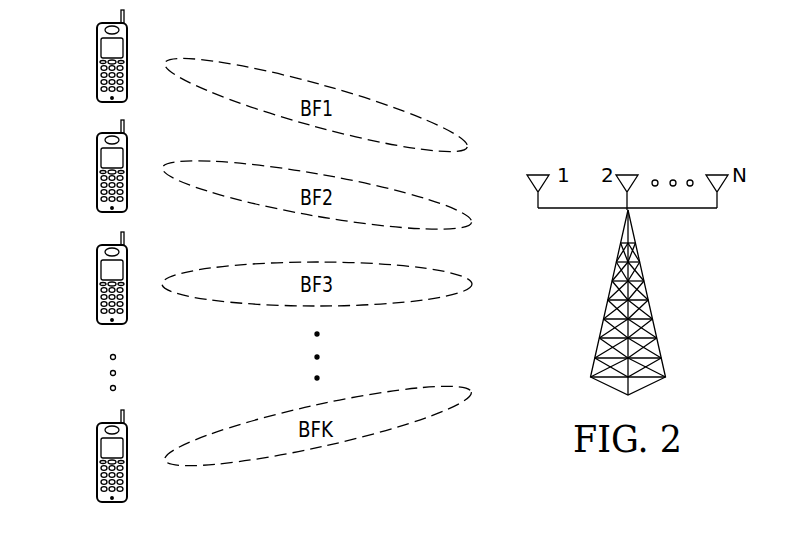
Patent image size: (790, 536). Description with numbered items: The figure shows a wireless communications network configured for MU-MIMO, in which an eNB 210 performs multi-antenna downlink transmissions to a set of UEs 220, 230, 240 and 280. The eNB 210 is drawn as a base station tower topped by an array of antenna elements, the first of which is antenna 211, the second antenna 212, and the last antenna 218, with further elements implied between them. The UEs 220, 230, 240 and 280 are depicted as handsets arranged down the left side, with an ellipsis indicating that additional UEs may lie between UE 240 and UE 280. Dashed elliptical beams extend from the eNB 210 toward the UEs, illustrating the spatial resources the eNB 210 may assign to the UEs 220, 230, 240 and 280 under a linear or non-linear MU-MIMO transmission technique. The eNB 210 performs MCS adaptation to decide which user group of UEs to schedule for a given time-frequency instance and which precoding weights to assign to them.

The eNB 210 is at (655, 299).
The antenna 1 211 is at (540, 174).
The antenna 2 212 is at (630, 174).
The antenna N 218 is at (718, 174).
The UE 220 is at (97, 62).
The UE 230 is at (97, 172).
The UE 240 is at (97, 284).
The UE 280 is at (97, 462).